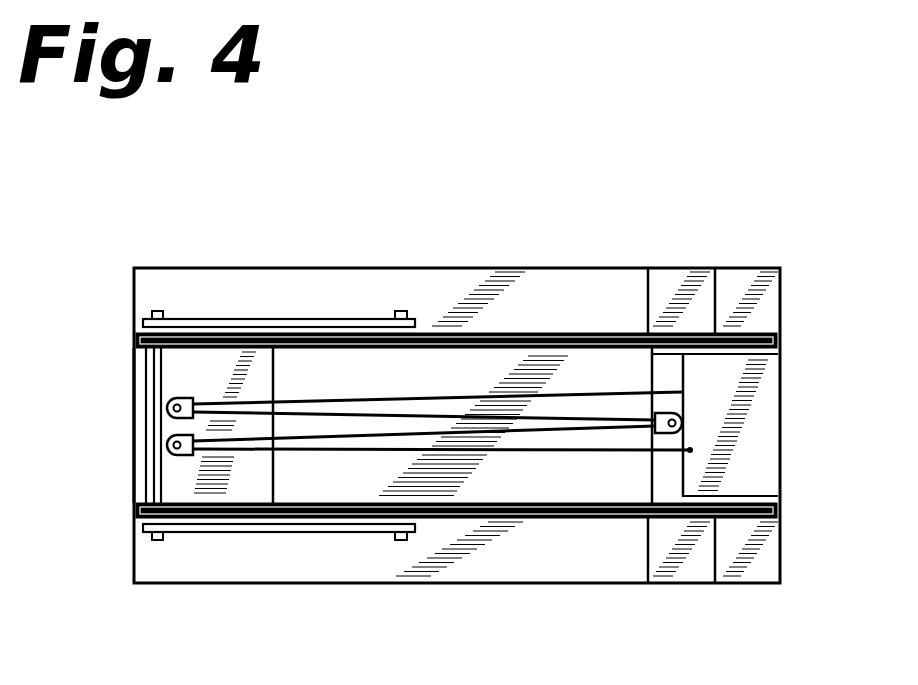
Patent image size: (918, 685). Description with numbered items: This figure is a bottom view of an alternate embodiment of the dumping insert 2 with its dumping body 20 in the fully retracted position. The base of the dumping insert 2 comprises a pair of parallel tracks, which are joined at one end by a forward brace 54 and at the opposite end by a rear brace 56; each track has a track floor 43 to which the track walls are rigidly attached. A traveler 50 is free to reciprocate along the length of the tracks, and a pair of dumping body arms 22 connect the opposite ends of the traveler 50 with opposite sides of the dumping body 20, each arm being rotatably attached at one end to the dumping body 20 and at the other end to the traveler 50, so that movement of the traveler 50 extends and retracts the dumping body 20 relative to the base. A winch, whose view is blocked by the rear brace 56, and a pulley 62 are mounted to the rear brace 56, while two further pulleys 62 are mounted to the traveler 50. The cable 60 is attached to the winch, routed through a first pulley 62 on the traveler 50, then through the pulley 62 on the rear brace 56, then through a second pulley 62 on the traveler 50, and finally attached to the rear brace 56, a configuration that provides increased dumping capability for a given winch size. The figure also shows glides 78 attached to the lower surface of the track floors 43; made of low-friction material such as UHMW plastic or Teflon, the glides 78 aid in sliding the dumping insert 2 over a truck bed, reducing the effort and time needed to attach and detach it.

The dumping insert 2 is at (625, 99).
The dumping body 20 is at (227, 562).
The dumping body arm 22 is at (299, 320).
The track floor 43 is at (606, 331).
The traveler 50 is at (152, 379).
The forward brace 54 is at (139, 484).
The rear brace 56 is at (747, 477).
The cable 60 is at (607, 453).
The pulley 62 is at (166, 408).
The glide 78 is at (555, 343).